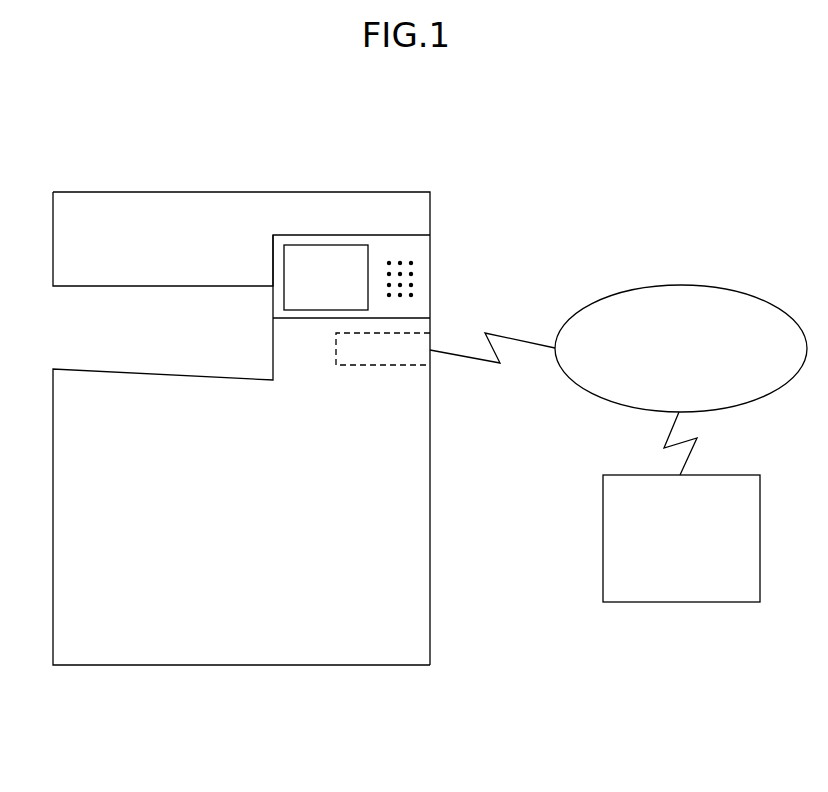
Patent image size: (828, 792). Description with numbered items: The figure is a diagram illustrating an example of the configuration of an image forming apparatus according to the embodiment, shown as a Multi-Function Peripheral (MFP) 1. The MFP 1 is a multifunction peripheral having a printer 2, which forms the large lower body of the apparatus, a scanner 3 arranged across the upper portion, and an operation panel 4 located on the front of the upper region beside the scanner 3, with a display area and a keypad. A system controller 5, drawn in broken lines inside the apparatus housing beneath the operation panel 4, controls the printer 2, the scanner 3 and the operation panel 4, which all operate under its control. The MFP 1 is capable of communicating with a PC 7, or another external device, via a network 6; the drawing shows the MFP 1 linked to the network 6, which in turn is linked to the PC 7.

The Multi-Function Peripheral (MFP) 1 is at (258, 163).
The printer 2 is at (60, 505).
The scanner 3 is at (60, 233).
The operation panel 4 is at (422, 252).
The system controller 5 is at (412, 370).
The network 6 is at (693, 284).
The PC 7 is at (698, 604).